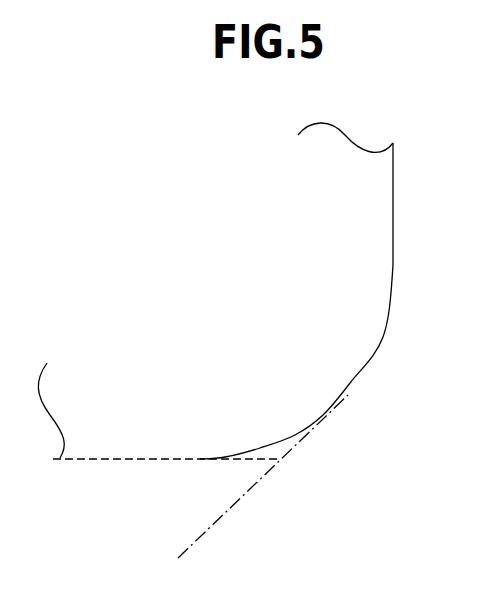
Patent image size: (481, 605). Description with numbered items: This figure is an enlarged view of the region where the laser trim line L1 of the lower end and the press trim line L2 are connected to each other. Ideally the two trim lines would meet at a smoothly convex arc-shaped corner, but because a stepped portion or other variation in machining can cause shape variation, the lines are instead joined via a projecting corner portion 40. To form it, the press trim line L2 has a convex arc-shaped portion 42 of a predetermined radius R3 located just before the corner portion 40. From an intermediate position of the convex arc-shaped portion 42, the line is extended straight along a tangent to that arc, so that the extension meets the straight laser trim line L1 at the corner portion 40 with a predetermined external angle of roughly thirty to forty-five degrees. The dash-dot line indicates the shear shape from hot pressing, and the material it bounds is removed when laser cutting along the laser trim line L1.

The corner portion 40 is at (279, 461).
The convex arc-shaped portion 42 is at (382, 340).
The laser trim line L1 is at (102, 461).
The press trim line L2 is at (393, 213).
The radius R3 is at (350, 383).